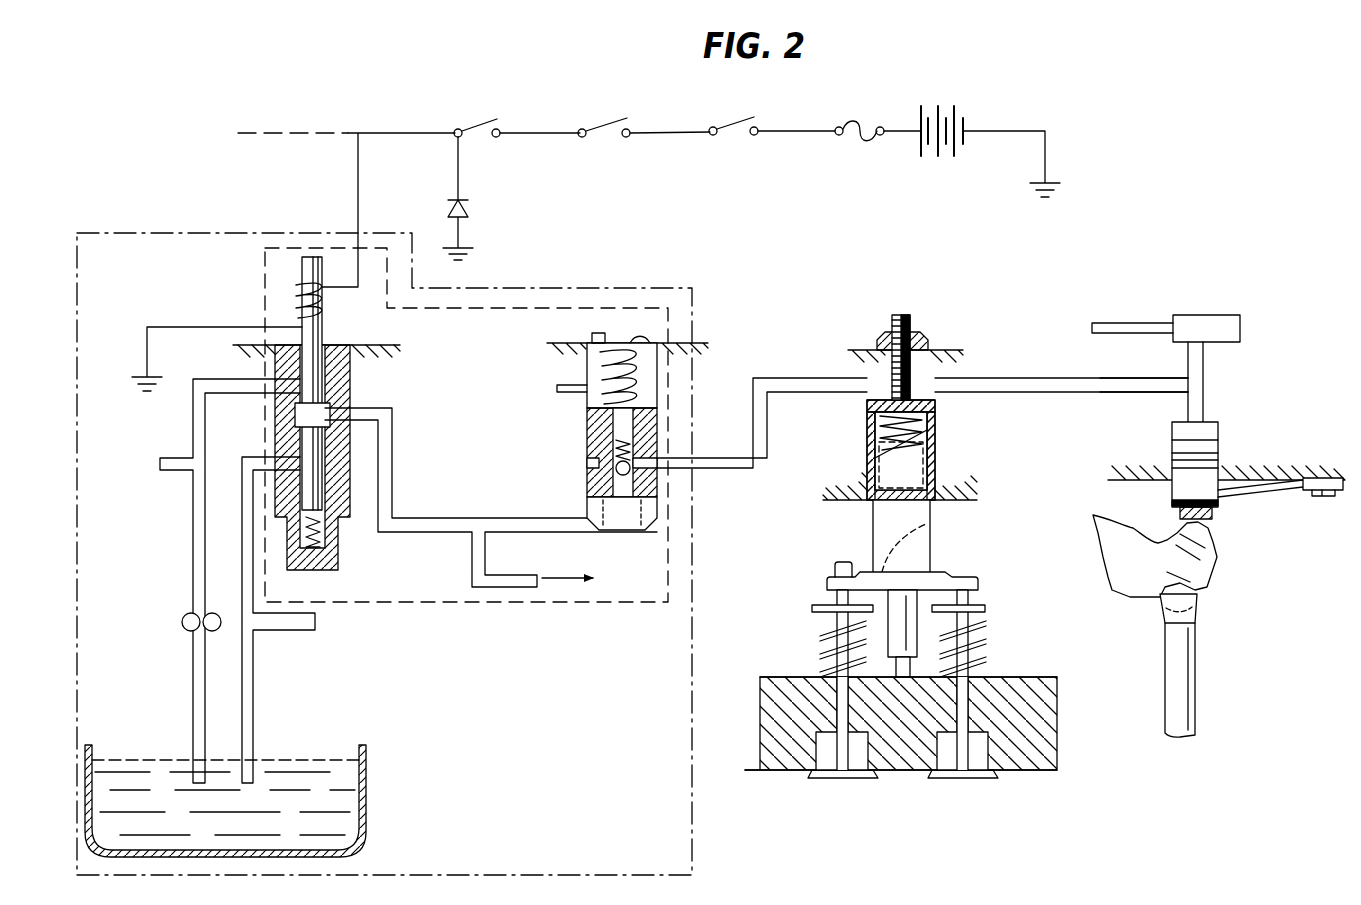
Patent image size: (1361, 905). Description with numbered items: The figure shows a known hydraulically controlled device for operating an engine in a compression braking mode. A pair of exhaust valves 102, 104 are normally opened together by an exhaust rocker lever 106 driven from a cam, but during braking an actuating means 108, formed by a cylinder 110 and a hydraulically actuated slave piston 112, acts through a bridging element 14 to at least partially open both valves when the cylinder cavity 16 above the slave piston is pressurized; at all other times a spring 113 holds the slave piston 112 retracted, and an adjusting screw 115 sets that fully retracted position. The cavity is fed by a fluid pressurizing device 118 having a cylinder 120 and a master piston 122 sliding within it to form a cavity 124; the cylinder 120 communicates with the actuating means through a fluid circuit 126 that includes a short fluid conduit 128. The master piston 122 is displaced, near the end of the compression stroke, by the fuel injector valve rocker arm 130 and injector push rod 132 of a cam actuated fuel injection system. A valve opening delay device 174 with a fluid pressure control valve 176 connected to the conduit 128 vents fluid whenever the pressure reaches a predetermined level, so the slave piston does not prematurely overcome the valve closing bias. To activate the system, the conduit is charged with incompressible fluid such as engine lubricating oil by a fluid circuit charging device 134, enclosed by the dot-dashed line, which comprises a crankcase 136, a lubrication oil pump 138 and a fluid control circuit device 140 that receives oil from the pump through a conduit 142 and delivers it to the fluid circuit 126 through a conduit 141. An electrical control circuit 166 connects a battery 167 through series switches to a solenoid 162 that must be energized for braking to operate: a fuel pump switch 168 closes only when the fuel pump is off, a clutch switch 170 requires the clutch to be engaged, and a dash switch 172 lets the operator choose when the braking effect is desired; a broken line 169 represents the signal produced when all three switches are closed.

The valve bridge 14 is at (850, 585).
The spring 16 is at (932, 400).
The exhaust valve 102 is at (844, 779).
The exhaust valve 104 is at (958, 779).
The exhaust rocker lever 106 is at (940, 556).
The actuating means 108 is at (896, 406).
The cylinder 110 is at (867, 463).
The slave piston 112 is at (868, 404).
The spring 113 is at (867, 428).
The adjusting screw 115 is at (905, 320).
The fluid pressurizing device 118 is at (1226, 431).
The cylinder 120 is at (1171, 460).
The master piston 122 is at (1218, 496).
The cavity 124 is at (1205, 424).
The fluid circuit 126 is at (1036, 376).
The fluid conduit 128 is at (1078, 386).
The fuel injector valve rocker arm 130 is at (1208, 572).
The injector push rod 132 is at (1194, 656).
The fluid circuit charging means 134 is at (513, 700).
The crankcase 136 is at (368, 794).
The lubrication oil pump 138 is at (184, 616).
The fluid control circuit device 140 is at (464, 466).
The conduit 141 is at (793, 380).
The conduit 142 is at (193, 440).
The solenoid 162 is at (300, 300).
The electrical control circuit 166 is at (350, 130).
The battery 167 is at (955, 108).
The fuel pump switch 168 is at (462, 128).
The broken line 169 is at (268, 136).
The clutch switch 170 is at (592, 128).
The dash switch 172 is at (722, 128).
The valve opening delay device 174 is at (1226, 314).
The fluid pressure control valve 176 is at (1195, 325).